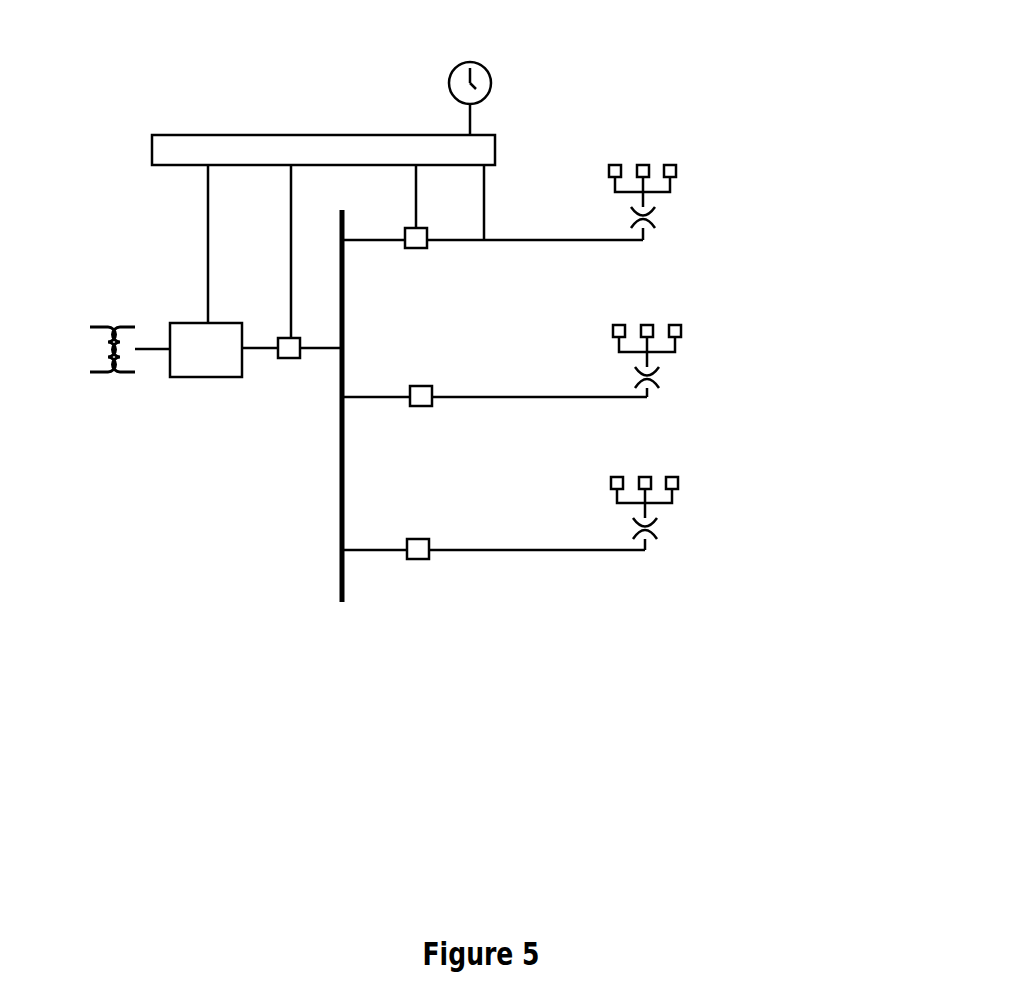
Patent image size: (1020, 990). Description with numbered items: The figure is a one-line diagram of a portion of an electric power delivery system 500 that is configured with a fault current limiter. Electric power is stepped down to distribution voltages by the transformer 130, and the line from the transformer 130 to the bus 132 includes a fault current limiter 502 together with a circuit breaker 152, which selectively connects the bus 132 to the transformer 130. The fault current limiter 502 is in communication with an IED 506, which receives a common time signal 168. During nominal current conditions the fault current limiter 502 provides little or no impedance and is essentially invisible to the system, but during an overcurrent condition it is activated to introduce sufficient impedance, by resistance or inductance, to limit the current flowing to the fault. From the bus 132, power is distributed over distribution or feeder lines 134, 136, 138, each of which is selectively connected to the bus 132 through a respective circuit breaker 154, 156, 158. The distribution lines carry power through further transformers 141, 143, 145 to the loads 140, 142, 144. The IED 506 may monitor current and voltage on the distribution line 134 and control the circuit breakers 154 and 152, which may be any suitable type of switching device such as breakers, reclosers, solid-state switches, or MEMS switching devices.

The electric power delivery system 500 is at (718, 73).
The intelligent electronic device 506 is at (402, 135).
The common time signal 168 is at (491, 83).
The transformer 130 is at (118, 327).
The fault current limiter 502 is at (200, 378).
The circuit breaker 152 is at (292, 358).
The bus 132 is at (340, 557).
The distribution line 134 is at (383, 242).
The distribution line 136 is at (365, 399).
The distribution line 138 is at (367, 552).
The circuit breaker 154 is at (422, 248).
The circuit breaker 156 is at (426, 406).
The circuit breaker 158 is at (425, 560).
The load 140 is at (685, 165).
The transformer 141 is at (657, 212).
The load 142 is at (689, 325).
The transformer 143 is at (661, 372).
The load 144 is at (687, 477).
The transformer 145 is at (659, 523).